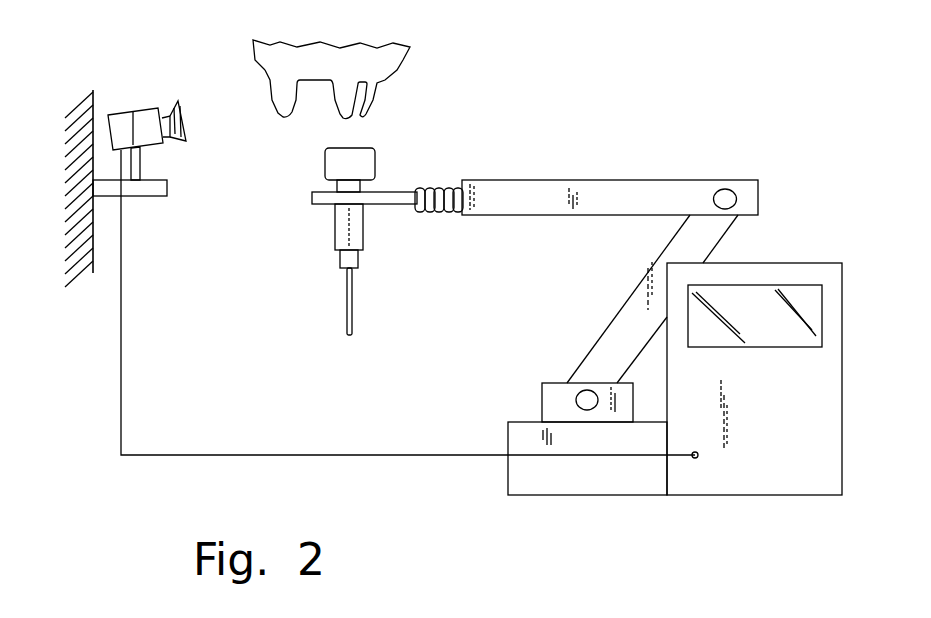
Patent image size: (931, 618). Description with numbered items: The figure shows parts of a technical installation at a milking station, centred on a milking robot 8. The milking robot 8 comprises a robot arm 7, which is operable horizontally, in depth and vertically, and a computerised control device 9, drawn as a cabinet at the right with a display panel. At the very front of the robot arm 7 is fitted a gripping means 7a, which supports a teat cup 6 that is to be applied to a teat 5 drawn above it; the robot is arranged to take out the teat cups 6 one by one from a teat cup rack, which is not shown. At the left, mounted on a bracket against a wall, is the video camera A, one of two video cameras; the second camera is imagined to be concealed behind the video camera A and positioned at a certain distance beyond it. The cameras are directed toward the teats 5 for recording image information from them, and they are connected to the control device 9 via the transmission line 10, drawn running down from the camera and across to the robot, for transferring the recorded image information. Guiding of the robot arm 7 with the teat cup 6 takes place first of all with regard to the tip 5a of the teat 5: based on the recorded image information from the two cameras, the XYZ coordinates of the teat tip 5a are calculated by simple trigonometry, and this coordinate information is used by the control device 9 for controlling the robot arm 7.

The video camera A is at (145, 118).
The teat 5 is at (370, 68).
The tip of teat 5a is at (272, 103).
The teat cup 6 is at (342, 236).
The robot arm 7 is at (633, 198).
The gripping means 7a is at (403, 193).
The milking robot 8 is at (838, 228).
The computerised control device 9 is at (793, 390).
The transmission line 10 is at (120, 357).